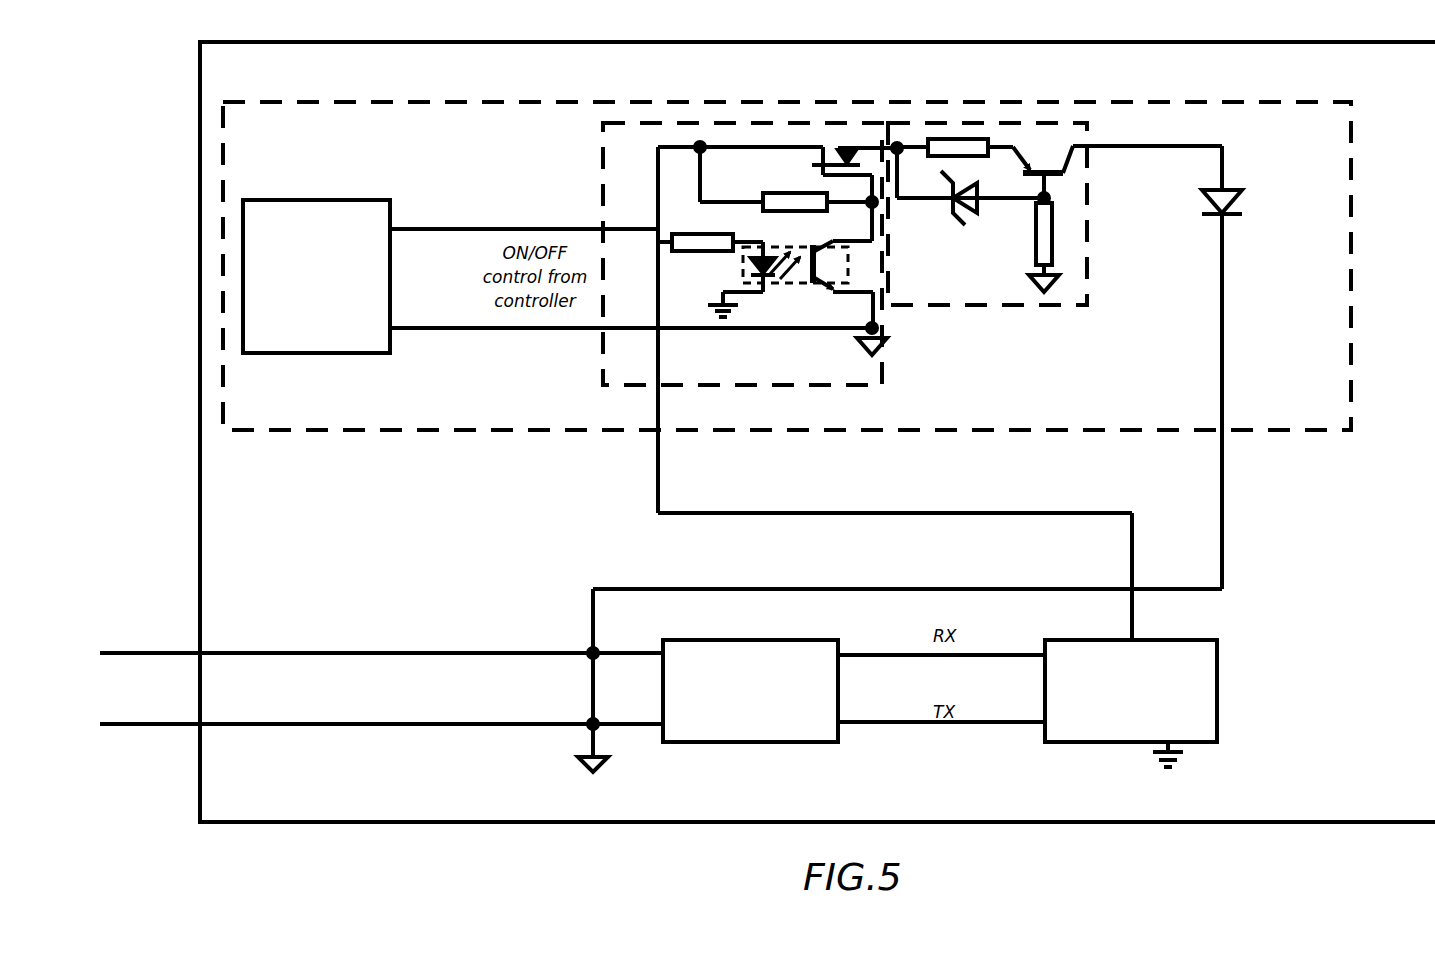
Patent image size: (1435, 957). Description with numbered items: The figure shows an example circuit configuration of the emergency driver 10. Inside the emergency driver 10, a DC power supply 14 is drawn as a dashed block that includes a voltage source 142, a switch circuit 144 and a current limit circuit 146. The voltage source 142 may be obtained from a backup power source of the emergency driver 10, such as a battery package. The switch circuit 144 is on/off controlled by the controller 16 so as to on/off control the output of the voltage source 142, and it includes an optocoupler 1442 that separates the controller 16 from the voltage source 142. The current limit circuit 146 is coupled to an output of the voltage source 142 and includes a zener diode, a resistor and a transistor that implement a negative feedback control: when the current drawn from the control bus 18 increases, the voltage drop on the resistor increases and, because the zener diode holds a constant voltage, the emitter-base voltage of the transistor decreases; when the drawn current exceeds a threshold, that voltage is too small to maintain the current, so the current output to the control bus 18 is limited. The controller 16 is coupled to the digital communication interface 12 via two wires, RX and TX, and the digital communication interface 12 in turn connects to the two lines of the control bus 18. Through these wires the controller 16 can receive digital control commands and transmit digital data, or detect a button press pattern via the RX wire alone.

The emergency driver 10 is at (238, 72).
The DC power supply 14 is at (285, 103).
The voltage source 142 is at (353, 200).
The switch circuit 144 is at (750, 290).
The current limit circuit 146 is at (980, 122).
The optocoupler 1442 is at (777, 246).
The control bus 18 is at (105, 653).
The digital communication interface 12 is at (838, 640).
The controller 16 is at (1217, 640).